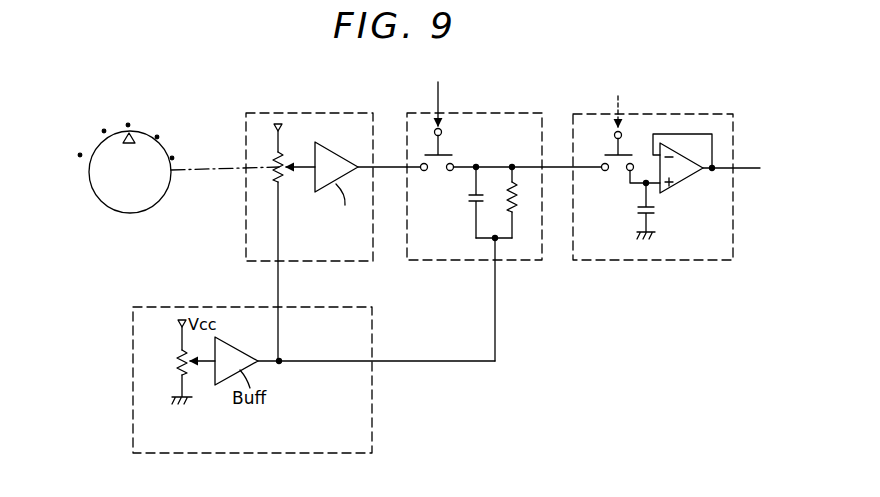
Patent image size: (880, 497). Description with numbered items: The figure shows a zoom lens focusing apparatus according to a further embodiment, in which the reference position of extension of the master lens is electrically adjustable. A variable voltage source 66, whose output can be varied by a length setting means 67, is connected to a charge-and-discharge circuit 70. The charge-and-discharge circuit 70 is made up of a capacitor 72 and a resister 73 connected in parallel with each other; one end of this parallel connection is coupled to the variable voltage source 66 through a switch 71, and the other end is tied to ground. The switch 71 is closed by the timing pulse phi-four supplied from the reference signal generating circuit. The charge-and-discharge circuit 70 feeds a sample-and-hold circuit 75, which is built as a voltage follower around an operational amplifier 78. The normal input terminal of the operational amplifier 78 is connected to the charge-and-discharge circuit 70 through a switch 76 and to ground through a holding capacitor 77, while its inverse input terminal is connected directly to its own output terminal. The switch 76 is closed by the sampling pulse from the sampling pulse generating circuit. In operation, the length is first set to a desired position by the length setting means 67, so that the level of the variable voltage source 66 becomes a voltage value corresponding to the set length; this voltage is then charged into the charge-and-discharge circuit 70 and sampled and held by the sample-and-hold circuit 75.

The variable voltage source 66 is at (318, 112).
The length setting means 67 is at (130, 213).
The charge-and-discharge circuit 70 is at (504, 210).
The switch 71 is at (448, 153).
The capacitor 72 is at (468, 204).
The resister 73 is at (513, 203).
The sample-and-hold circuit 75 is at (666, 162).
The switch 76 is at (612, 152).
The holding capacitor 77 is at (637, 210).
The operational amplifier 78 is at (690, 185).